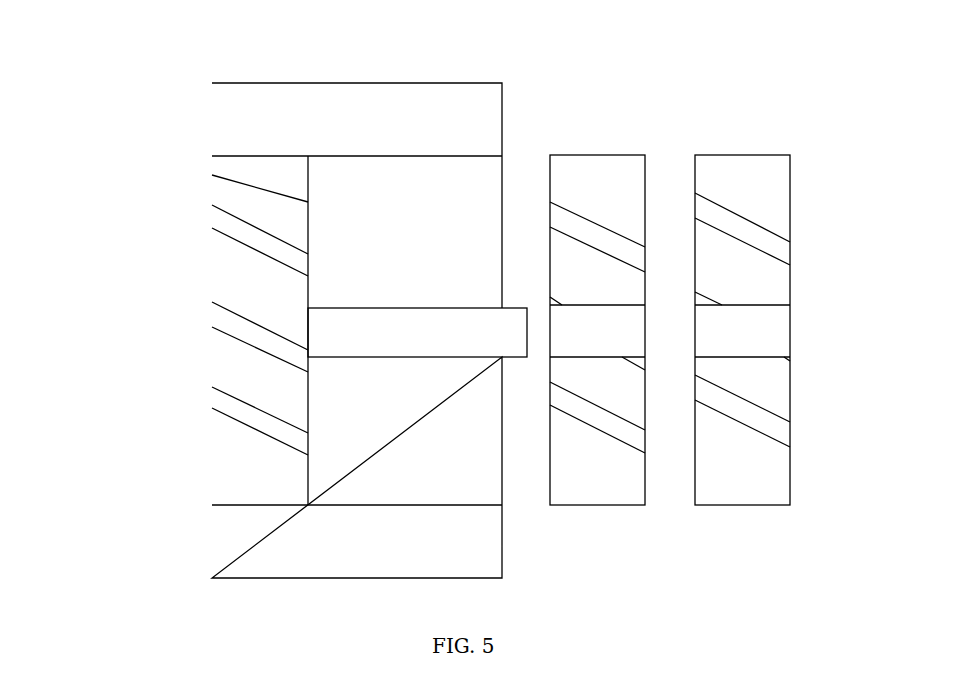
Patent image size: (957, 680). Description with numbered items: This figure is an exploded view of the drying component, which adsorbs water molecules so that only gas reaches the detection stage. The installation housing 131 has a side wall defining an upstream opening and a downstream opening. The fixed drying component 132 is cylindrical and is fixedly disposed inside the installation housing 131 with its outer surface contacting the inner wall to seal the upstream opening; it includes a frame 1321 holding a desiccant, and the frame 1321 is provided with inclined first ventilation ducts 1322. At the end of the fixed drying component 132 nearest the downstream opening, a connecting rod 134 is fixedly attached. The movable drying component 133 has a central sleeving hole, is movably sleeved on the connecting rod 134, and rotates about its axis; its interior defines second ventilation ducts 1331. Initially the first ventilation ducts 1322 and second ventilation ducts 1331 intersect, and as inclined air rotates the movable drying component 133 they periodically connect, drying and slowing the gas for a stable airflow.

The installation housing 131 is at (262, 84).
The fixed drying component 132 is at (112, 163).
The frame 1321 is at (212, 175).
The first ventilation ducts 1322 is at (245, 245).
The movable drying component 133 is at (595, 155).
The second ventilation ducts 1331 is at (748, 220).
The connecting rod 134 is at (358, 357).